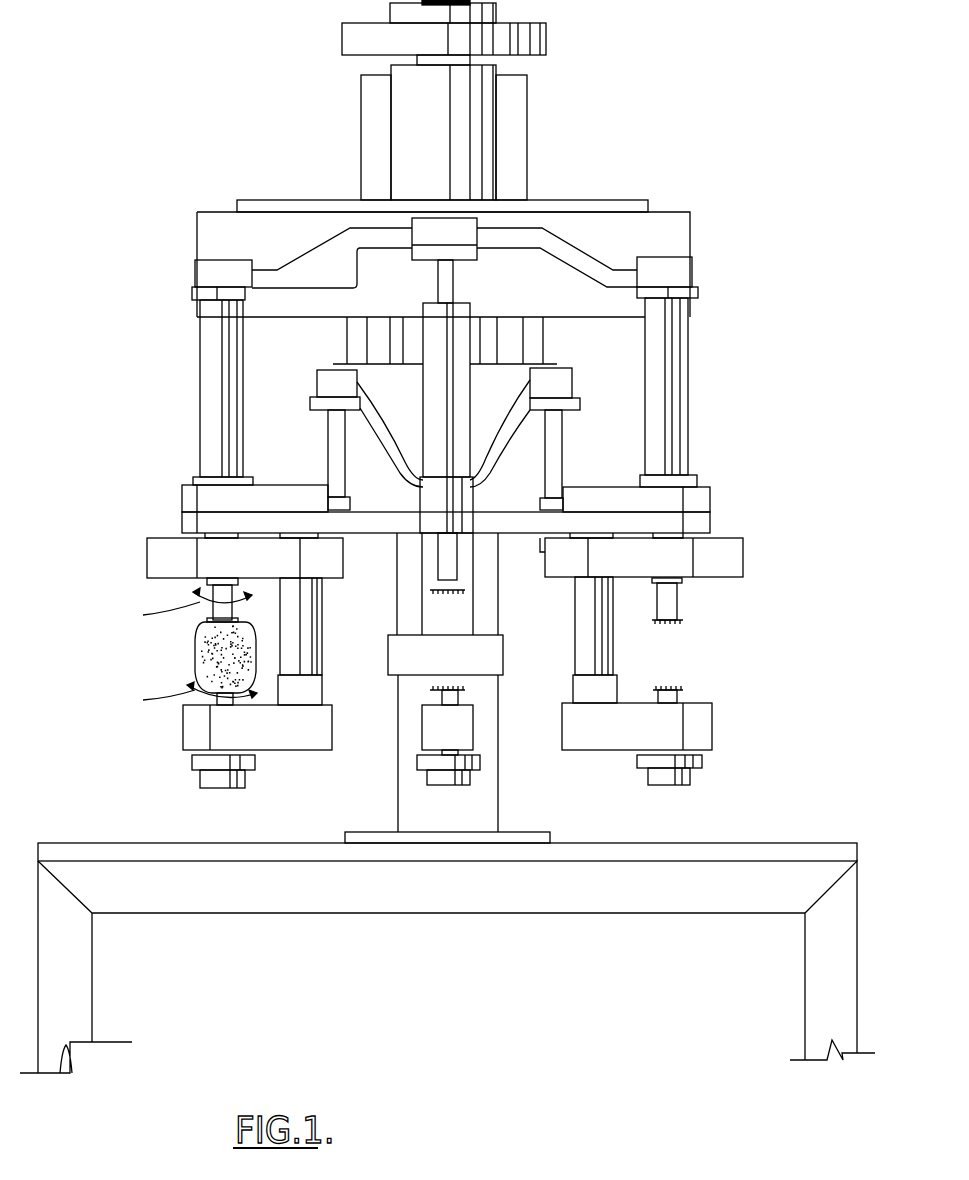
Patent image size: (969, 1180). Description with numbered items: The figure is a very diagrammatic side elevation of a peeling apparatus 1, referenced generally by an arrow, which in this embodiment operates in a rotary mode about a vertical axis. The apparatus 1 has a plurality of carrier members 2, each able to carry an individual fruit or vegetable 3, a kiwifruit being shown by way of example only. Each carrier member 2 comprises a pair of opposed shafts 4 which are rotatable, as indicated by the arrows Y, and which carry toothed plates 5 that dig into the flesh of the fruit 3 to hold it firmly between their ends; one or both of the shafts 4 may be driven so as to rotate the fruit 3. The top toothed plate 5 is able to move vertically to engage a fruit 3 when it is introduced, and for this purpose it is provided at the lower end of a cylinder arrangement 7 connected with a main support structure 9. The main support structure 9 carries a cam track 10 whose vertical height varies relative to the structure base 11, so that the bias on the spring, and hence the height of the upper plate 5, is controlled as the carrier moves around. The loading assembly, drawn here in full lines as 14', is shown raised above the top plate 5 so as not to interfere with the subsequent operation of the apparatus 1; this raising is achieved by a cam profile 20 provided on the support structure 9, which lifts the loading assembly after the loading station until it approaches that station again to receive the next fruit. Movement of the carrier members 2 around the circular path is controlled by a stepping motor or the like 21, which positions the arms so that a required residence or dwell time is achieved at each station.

The peeling apparatus 1 is at (173, 360).
The carrier member 2 is at (677, 681).
The fruit or vegetable 3 is at (208, 657).
The shaft 4 is at (675, 593).
The toothed plate 5 is at (683, 620).
The cylinder arrangement 7 is at (690, 360).
The main support structure 9 is at (610, 255).
The cam track 10 is at (613, 278).
The structure base 11 is at (695, 845).
The loading assembly in raised position 14' is at (429, 526).
The cam profile 20 is at (393, 448).
The stepping motor 21 is at (490, 118).